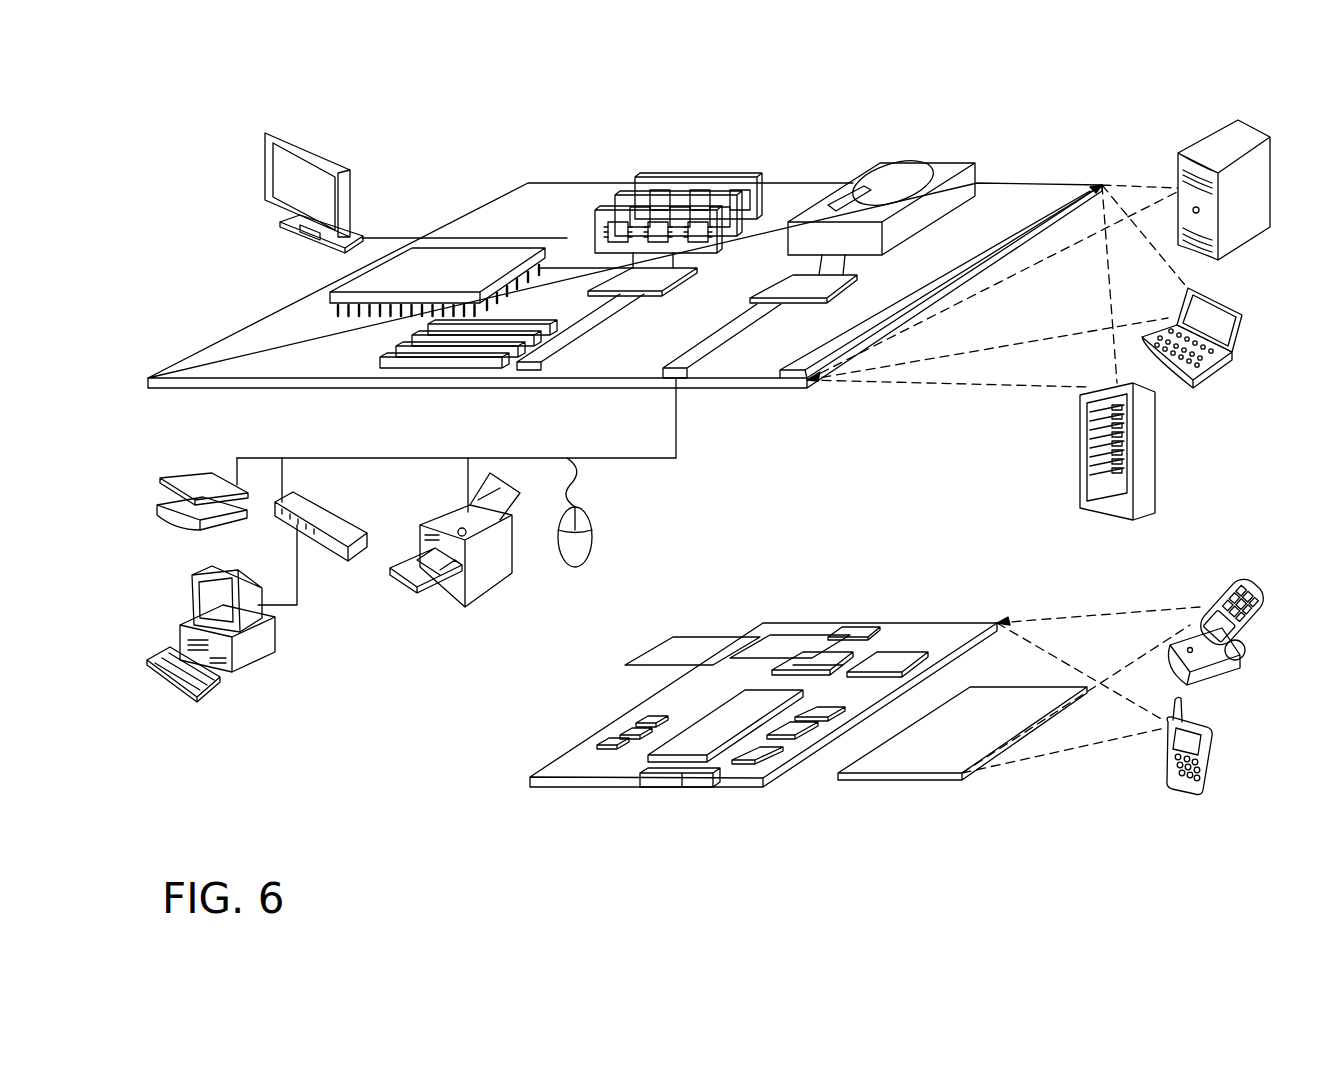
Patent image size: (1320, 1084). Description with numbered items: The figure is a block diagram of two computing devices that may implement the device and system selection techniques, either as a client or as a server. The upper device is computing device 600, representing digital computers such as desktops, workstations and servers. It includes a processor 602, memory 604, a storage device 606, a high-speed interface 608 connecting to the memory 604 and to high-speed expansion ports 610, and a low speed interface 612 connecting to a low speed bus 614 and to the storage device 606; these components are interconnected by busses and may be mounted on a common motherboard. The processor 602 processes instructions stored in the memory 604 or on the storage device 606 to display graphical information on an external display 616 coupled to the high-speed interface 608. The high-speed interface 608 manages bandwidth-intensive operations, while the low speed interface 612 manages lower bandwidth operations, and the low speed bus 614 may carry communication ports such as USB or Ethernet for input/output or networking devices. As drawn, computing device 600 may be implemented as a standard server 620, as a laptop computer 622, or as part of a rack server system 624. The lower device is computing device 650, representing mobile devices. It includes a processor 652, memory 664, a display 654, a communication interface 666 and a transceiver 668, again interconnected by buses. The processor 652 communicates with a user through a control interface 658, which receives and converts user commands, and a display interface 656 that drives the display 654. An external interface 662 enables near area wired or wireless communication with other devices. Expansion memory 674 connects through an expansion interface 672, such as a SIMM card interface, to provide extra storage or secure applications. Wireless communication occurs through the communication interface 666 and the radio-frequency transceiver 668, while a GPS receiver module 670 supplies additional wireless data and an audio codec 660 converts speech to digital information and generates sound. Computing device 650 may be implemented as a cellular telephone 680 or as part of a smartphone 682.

The computing device 600 is at (452, 160).
The processor 602 is at (337, 293).
The memory 604 is at (657, 174).
The storage device 606 is at (878, 168).
The high-speed interface 608 is at (620, 282).
The high-speed expansion ports 610 is at (403, 349).
The low speed interface 612 is at (787, 284).
The low speed bus 614 is at (690, 382).
The display 616 is at (270, 130).
The standard server 620 is at (1165, 165).
The laptop computer 622 is at (1227, 297).
The rack server system 624 is at (1080, 475).
The computing device 650 is at (505, 785).
The processor 652 is at (698, 748).
The display 654 is at (927, 763).
The display interface 656 is at (753, 752).
The control interface 658 is at (795, 737).
The audio codec 660 is at (822, 714).
The external interface 662 is at (665, 778).
The memory 664 is at (618, 737).
The communication interface 666 is at (813, 660).
The transceiver 668 is at (887, 660).
The GPS receiver module 670 is at (862, 623).
The expansion interface 672 is at (747, 636).
The expansion memory 674 is at (673, 637).
The cellular telephone 680 is at (1223, 600).
The smartphone 682 is at (1165, 752).